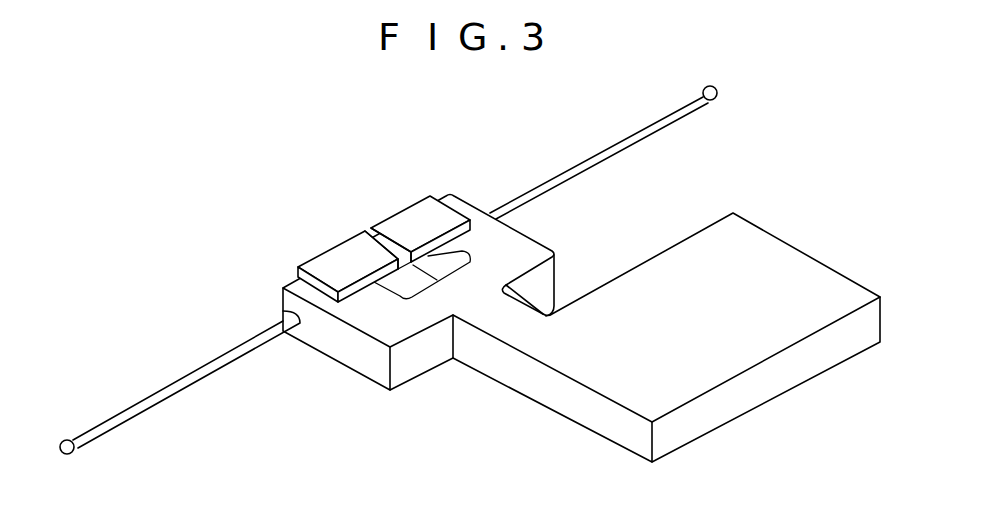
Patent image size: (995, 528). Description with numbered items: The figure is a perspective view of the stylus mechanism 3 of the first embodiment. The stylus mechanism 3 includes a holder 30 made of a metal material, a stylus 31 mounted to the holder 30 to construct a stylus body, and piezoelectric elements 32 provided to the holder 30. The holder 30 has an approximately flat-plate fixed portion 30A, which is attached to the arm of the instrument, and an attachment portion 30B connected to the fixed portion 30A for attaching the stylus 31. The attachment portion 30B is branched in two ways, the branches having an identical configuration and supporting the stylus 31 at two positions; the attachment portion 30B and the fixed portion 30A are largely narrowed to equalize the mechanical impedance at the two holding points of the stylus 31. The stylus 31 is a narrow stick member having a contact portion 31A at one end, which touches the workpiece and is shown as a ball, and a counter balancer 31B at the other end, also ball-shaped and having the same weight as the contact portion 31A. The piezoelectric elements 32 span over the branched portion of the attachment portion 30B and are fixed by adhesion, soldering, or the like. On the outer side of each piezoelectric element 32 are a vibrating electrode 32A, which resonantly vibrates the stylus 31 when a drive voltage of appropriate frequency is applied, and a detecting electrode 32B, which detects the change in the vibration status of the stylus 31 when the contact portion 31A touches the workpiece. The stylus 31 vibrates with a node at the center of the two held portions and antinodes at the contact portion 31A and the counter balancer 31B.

The stylus mechanism 3 is at (114, 181).
The holder 30 is at (757, 263).
The fixed portion 30A is at (717, 410).
The attachment portion 30B is at (512, 250).
The stylus 31 is at (192, 378).
The contact portion 31A is at (74, 453).
The counter balancer 31B is at (716, 101).
The piezoelectric element 32 is at (376, 238).
The vibrating electrode 32A is at (333, 262).
The detecting electrode 32B is at (407, 220).